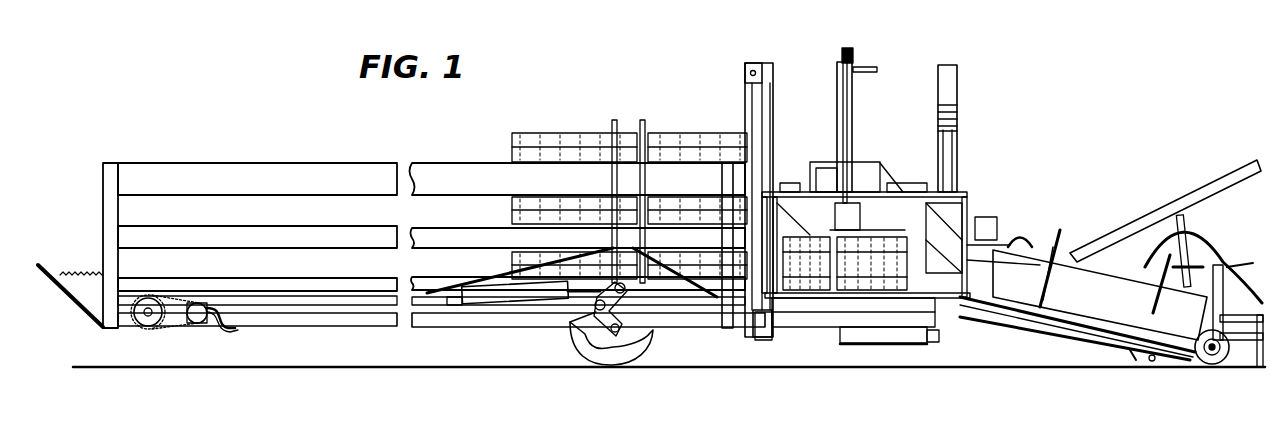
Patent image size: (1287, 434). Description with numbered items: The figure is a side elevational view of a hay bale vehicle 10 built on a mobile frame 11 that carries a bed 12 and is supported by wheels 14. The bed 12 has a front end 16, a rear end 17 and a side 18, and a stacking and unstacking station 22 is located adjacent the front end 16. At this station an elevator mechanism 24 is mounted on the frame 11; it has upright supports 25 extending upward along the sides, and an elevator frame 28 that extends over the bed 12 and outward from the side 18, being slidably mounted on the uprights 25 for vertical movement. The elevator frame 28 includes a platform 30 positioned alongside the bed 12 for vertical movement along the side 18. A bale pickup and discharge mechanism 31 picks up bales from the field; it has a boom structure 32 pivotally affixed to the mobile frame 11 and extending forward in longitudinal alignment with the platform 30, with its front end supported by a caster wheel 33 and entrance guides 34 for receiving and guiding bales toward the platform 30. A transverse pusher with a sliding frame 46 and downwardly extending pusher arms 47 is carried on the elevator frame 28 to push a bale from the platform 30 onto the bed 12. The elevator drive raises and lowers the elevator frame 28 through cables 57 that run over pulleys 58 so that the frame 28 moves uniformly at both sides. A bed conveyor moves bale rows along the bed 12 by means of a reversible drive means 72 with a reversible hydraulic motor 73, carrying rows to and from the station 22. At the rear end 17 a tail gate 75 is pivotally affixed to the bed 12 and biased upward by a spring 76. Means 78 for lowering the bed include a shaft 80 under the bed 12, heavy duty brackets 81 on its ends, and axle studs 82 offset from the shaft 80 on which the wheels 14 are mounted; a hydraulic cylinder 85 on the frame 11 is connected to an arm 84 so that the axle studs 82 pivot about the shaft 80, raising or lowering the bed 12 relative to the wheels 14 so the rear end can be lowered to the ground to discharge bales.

The hay bale vehicle 10 is at (1057, 45).
The mobile frame 11 is at (698, 322).
The bed 12 is at (520, 322).
The wheels 14 is at (611, 366).
The front end 16 is at (810, 318).
The rear end 17 is at (140, 329).
The side 18 is at (356, 328).
The stacking and unstacking station 22 is at (967, 192).
The elevator mechanism 24 is at (790, 183).
The upright supports 25 is at (773, 116).
The elevator frame 28 is at (893, 183).
The platform 30 is at (840, 297).
The bale pickup and discharge mechanism 31 is at (1073, 349).
The boom structure 32 is at (1133, 350).
The caster wheel 33 is at (1212, 364).
The entrance guides 34 is at (1262, 370).
The frame 46 is at (862, 216).
The pusher arms 47 is at (820, 244).
The cables 57 is at (745, 105).
The pulleys 58 is at (745, 70).
The reversible drive means 72 is at (180, 334).
The reversible hydraulic motor 73 is at (200, 326).
The tail gate 75 is at (70, 296).
The spring 76 is at (78, 272).
The means for lowering the bed 78 is at (484, 306).
The shaft 80 is at (608, 305).
The brackets 81 is at (596, 322).
The axle studs 82 is at (621, 326).
The arm 84 is at (627, 289).
The hydraulic cylinder 85 is at (545, 306).